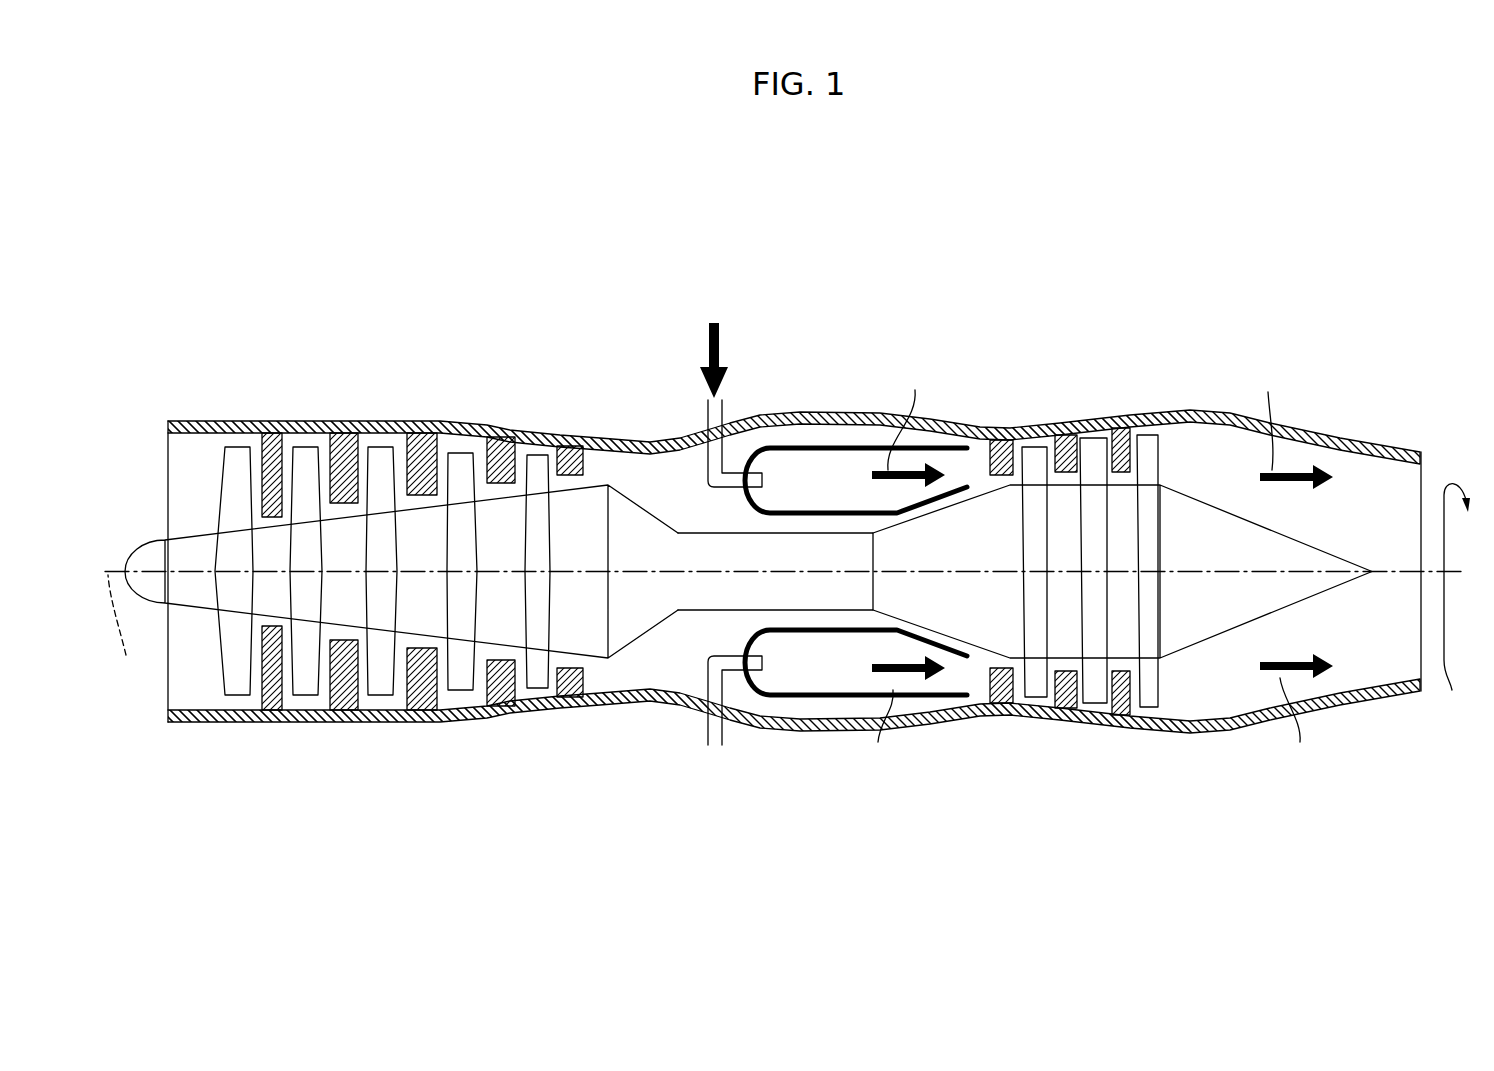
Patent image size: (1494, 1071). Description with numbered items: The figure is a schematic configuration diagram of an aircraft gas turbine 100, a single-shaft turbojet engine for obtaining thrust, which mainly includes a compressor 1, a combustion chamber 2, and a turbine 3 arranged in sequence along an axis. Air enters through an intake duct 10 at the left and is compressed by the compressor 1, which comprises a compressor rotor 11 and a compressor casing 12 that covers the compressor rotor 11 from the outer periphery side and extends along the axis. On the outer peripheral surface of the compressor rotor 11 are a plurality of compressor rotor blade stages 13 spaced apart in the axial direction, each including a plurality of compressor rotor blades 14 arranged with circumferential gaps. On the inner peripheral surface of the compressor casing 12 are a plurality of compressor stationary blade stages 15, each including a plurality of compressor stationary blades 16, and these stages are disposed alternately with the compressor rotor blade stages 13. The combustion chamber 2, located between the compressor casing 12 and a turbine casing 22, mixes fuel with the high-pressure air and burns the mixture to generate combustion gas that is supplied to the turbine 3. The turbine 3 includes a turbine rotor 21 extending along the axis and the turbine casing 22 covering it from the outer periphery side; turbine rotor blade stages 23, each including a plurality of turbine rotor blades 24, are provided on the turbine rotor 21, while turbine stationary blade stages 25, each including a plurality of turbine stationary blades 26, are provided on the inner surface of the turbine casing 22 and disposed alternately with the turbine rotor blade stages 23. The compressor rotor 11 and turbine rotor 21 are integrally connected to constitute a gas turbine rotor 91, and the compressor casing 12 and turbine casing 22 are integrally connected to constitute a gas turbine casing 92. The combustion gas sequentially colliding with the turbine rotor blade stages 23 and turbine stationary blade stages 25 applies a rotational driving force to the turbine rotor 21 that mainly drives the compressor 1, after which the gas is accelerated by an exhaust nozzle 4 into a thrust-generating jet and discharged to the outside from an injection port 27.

The aircraft gas turbine 100 is at (1212, 270).
The compressor 1 is at (425, 562).
The combustion chamber 2 is at (836, 392).
The turbine 3 is at (1118, 564).
The exhaust nozzle 4 is at (1319, 530).
The intake duct 10 is at (168, 438).
The compressor rotor 11 is at (578, 628).
The compressor casing 12 is at (437, 587).
The compressor rotor blade stages 13 is at (269, 651).
The compressor rotor blades 14 is at (240, 697).
The compressor stationary blade stages 15 is at (422, 644).
The compressor stationary blades 16 is at (428, 709).
The turbine rotor 21 is at (1003, 622).
The turbine casing 22 is at (1085, 588).
The turbine rotor blade stages 23 is at (1168, 645).
The turbine rotor blades 24 is at (1097, 697).
The turbine stationary blade stages 25 is at (1060, 642).
The turbine stationary blades 26 is at (1005, 701).
The injection port 27 is at (1423, 477).
The gas turbine rotor 91 is at (748, 670).
The gas turbine casing 92 is at (794, 587).